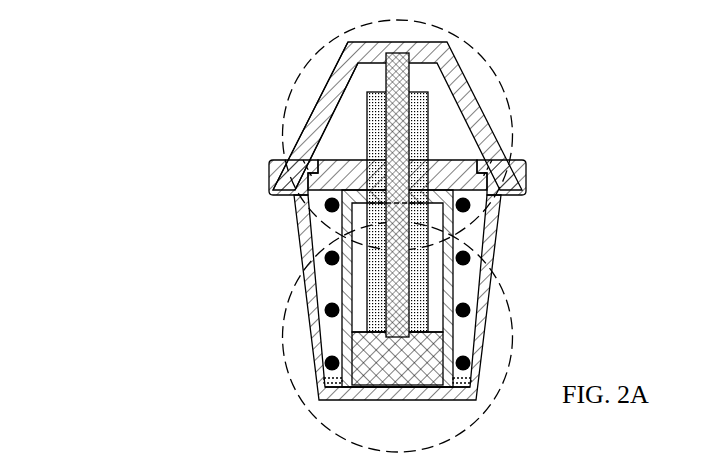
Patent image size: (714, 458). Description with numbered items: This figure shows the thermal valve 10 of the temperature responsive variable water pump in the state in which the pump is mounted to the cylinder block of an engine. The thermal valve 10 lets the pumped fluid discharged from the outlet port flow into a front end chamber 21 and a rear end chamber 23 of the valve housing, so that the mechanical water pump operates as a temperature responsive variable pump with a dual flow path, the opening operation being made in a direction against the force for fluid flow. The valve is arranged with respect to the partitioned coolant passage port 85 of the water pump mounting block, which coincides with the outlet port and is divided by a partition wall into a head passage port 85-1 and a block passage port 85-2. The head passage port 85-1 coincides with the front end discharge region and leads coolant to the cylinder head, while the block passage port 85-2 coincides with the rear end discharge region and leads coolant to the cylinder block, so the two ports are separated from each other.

The thermal valve 10 is at (480, 214).
The front end chamber 21 is at (438, 280).
The rear end chamber 23 is at (453, 115).
The partitioned coolant passage port 85 is at (280, 221).
The head passage port 85-1 is at (328, 284).
The block passage port 85-2 is at (348, 125).